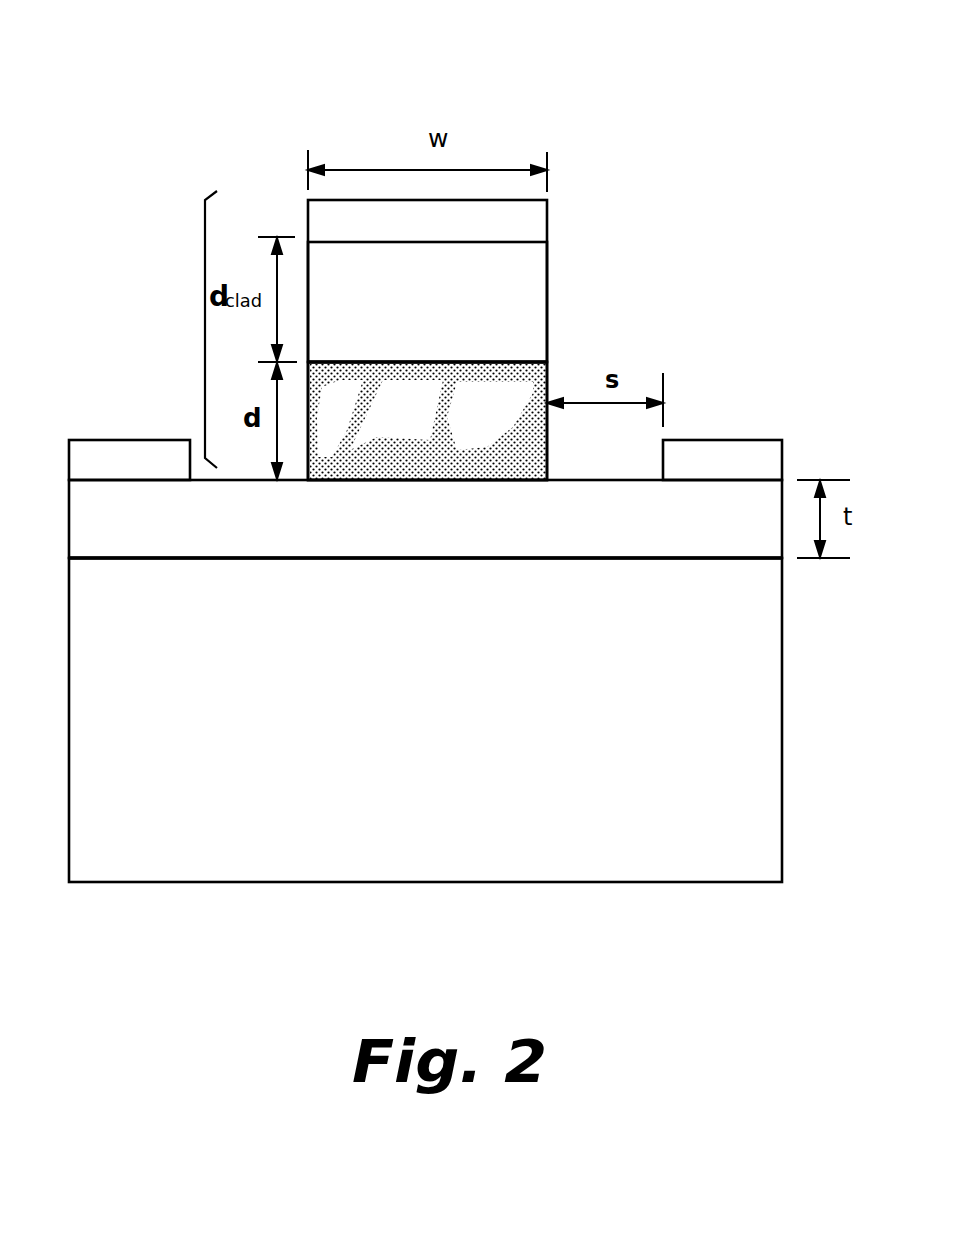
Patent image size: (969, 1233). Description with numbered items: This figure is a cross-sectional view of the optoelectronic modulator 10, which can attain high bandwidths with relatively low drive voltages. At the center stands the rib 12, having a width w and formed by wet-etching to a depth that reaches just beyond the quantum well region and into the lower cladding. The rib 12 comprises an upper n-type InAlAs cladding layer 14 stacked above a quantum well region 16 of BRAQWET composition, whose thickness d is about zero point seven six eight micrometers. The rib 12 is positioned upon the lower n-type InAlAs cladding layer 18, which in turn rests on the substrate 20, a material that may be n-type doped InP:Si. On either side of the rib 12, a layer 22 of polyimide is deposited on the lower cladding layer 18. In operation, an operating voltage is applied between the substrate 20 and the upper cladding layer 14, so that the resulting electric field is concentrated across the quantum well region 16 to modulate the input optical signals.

The optoelectronic modulator 10 is at (100, 178).
The rib 12 is at (205, 358).
The upper n-type InAlAs cladding layer 14 is at (533, 290).
The quantum well region 16 is at (540, 388).
The lower n-type InAlAs cladding layer 18 is at (78, 527).
The substrate 20 is at (762, 680).
The polyimide layer 22 is at (717, 440).